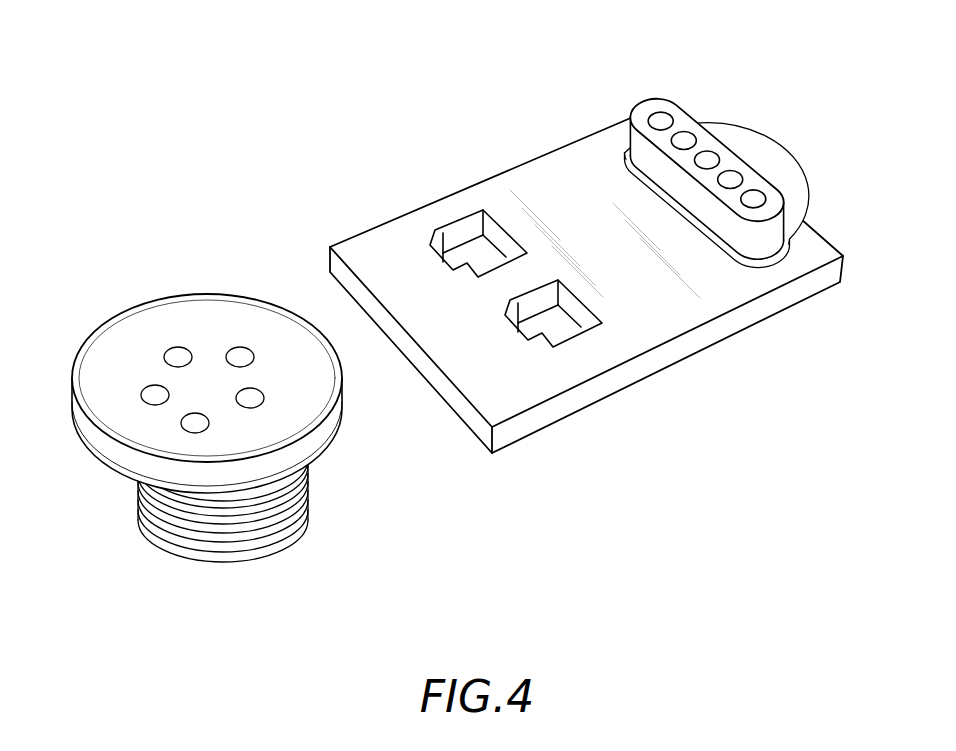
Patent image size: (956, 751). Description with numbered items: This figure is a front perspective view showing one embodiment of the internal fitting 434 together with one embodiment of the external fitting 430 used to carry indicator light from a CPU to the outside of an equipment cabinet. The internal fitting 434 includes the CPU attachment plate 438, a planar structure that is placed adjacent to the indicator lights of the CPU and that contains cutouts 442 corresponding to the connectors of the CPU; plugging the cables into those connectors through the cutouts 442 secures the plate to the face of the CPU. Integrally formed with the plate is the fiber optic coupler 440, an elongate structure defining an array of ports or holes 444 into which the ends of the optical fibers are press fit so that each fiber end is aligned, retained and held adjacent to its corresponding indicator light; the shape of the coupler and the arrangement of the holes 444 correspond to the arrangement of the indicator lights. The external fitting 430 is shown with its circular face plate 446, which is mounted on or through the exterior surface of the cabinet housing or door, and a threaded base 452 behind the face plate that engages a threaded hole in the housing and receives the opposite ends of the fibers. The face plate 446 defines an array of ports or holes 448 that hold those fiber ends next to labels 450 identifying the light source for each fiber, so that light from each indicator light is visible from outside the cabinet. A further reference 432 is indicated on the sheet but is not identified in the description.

The external fitting 430 is at (198, 433).
The knob base receptacle 432 is at (593, 323).
The internal fitting 434 is at (652, 376).
The CPU attachment plate 438 is at (586, 292).
The fiber optic coupler 440 is at (736, 148).
The cutouts 442 is at (547, 312).
The ports or holes 444 is at (686, 118).
The face plate 446 is at (132, 352).
The ports or holes 448 is at (257, 377).
The labels 450 is at (198, 330).
The threaded base 452 is at (220, 562).